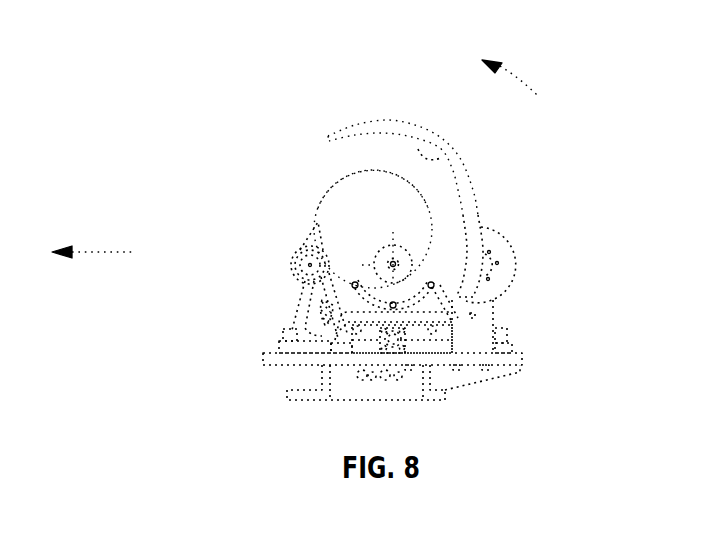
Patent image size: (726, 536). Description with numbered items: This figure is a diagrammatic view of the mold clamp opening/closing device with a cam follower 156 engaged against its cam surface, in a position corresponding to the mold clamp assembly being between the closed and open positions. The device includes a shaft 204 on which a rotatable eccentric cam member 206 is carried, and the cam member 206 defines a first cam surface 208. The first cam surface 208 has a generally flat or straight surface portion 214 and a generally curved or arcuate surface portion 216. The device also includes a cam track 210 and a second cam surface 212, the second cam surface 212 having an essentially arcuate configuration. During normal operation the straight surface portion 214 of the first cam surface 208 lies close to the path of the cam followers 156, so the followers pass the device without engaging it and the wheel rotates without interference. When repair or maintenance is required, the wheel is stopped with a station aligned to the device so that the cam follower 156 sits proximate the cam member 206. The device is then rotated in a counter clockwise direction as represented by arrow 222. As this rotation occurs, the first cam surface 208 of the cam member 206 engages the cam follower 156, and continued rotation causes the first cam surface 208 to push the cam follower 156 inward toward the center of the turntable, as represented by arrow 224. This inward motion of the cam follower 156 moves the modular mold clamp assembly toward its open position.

The cam follower 156 is at (300, 273).
The shaft 204 is at (395, 263).
The rotatable eccentric cam member 206 is at (348, 196).
The first cam surface 208 is at (320, 221).
The cam track 210 is at (448, 220).
The second cam surface 212 is at (430, 160).
The straight surface portion 214 is at (325, 292).
The arcuate surface portion 216 is at (375, 168).
The arrow 222 is at (528, 83).
The arrow 224 is at (92, 252).